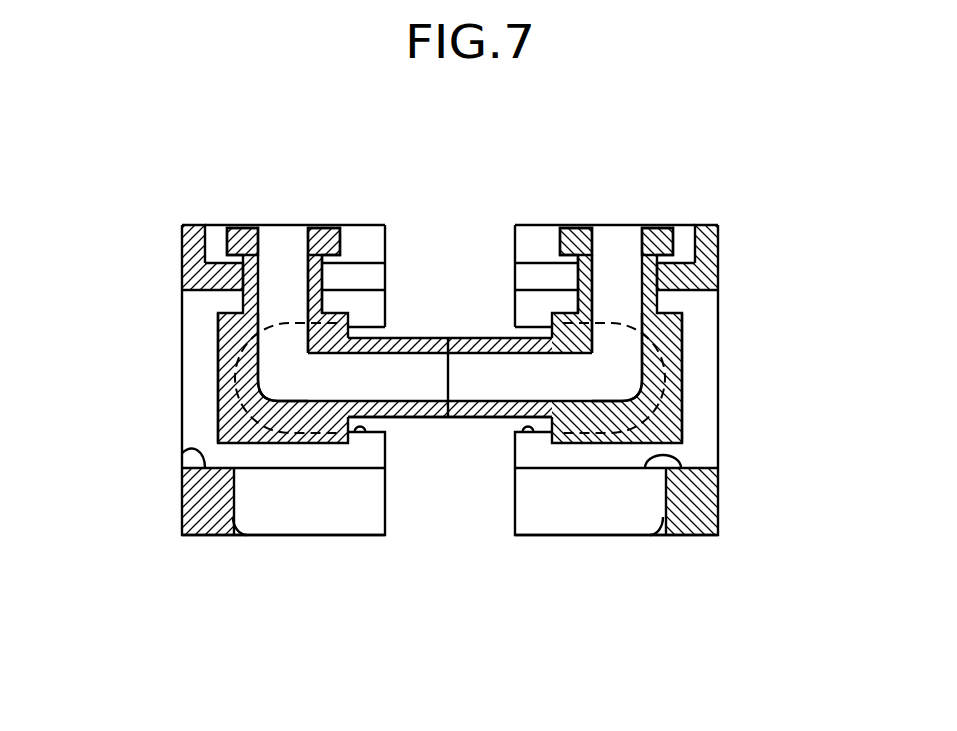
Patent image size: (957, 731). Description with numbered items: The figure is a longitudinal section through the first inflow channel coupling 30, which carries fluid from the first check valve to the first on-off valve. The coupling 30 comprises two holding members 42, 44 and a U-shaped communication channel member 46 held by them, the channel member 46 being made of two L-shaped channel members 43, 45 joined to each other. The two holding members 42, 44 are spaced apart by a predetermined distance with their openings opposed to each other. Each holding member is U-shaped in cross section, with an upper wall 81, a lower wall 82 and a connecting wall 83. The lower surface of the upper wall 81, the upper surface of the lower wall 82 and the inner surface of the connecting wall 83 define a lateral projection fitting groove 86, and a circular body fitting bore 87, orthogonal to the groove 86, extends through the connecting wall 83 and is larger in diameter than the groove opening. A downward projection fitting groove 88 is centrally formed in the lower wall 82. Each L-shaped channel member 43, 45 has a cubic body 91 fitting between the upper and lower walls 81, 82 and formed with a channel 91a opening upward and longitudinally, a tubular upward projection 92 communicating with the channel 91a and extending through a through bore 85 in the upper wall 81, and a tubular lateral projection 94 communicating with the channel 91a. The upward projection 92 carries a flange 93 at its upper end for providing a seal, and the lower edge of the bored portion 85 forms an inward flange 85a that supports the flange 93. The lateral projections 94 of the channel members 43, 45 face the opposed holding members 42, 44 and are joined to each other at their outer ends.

The first inflow channel coupling 30 is at (447, 375).
The holding member 42 is at (192, 537).
The L-shaped channel member 43 is at (218, 422).
The holding member 44 is at (707, 540).
The L-shaped channel member 45 is at (683, 430).
The U-shaped communication channel member 46 is at (471, 418).
The upper wall 81 is at (182, 250).
The lower wall 82 is at (188, 503).
The connecting wall 83 is at (192, 342).
The through bore 85 is at (214, 222).
The inward flange 85a is at (252, 268).
The lateral projection fitting groove 86 is at (362, 434).
The body fitting bore 87 is at (180, 453).
The downward projection fitting groove 88 is at (245, 530).
The cubic body 91 is at (218, 392).
The channel 91a is at (290, 385).
The tubular upward projection 92 is at (313, 282).
The flange 93 is at (330, 232).
The tubular lateral projection 94 is at (413, 418).